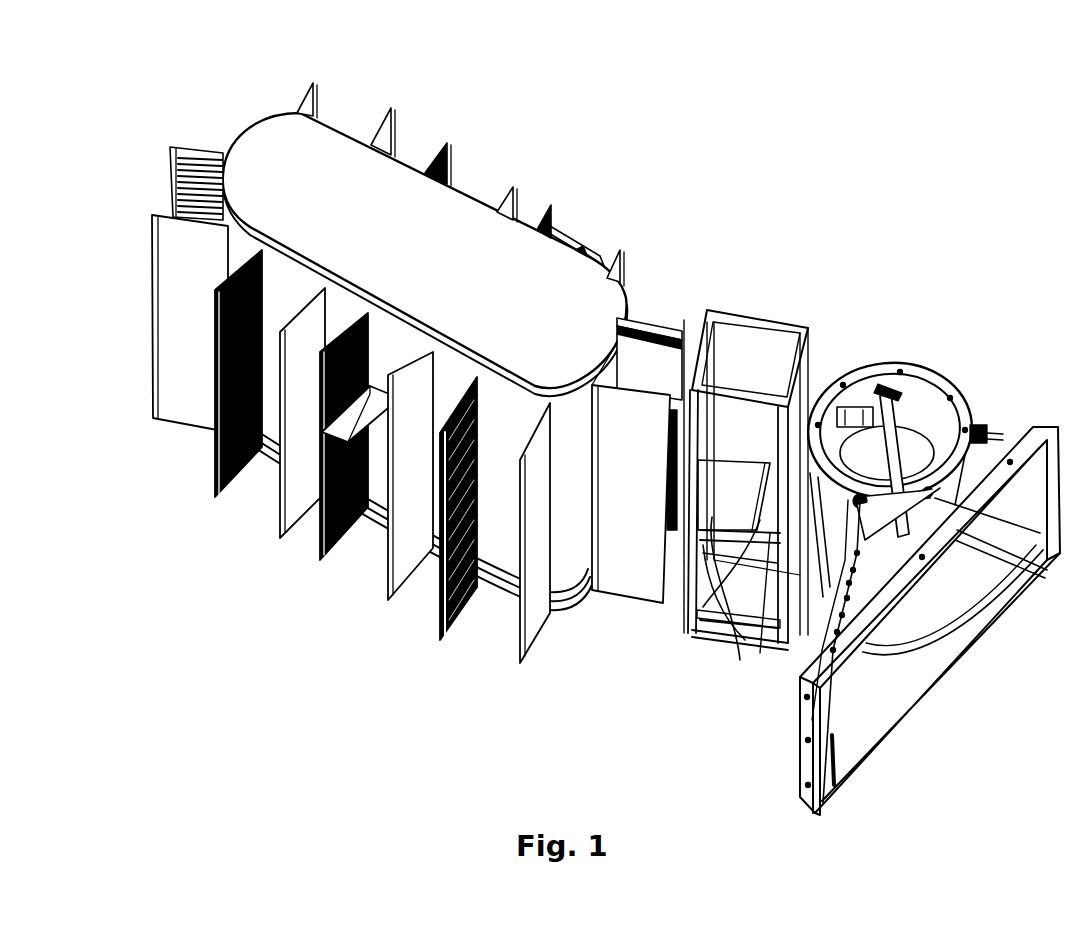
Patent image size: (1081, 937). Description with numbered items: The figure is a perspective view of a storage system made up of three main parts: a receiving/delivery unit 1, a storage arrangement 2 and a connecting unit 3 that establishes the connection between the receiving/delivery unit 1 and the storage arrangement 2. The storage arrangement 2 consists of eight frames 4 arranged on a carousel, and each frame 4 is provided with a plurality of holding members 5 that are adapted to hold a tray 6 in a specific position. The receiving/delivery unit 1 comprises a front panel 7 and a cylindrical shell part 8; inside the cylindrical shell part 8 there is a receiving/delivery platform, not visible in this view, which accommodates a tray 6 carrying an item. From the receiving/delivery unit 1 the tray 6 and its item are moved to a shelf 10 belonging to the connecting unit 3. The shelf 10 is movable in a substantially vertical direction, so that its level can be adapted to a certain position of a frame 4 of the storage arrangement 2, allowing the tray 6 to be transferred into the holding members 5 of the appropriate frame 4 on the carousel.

The receiving/delivery unit 1 is at (967, 377).
The storage arrangement 2 is at (540, 153).
The connecting unit 3 is at (790, 300).
The frame 4 is at (336, 108).
The holding member 5 is at (353, 545).
The tray 6 is at (587, 252).
The front panel 7 is at (847, 700).
The cylindrical shell part 8 is at (827, 595).
The shelf 10 is at (700, 623).